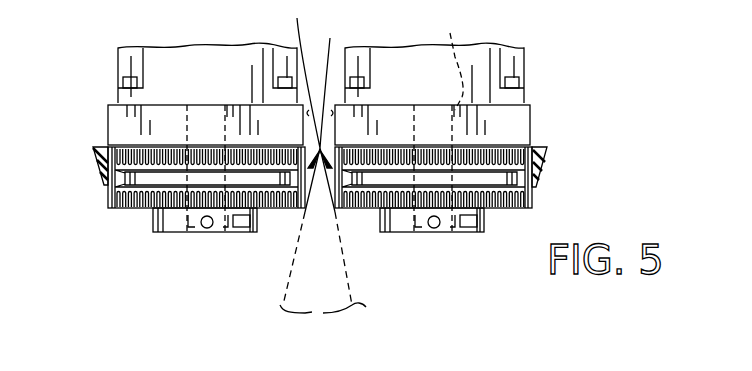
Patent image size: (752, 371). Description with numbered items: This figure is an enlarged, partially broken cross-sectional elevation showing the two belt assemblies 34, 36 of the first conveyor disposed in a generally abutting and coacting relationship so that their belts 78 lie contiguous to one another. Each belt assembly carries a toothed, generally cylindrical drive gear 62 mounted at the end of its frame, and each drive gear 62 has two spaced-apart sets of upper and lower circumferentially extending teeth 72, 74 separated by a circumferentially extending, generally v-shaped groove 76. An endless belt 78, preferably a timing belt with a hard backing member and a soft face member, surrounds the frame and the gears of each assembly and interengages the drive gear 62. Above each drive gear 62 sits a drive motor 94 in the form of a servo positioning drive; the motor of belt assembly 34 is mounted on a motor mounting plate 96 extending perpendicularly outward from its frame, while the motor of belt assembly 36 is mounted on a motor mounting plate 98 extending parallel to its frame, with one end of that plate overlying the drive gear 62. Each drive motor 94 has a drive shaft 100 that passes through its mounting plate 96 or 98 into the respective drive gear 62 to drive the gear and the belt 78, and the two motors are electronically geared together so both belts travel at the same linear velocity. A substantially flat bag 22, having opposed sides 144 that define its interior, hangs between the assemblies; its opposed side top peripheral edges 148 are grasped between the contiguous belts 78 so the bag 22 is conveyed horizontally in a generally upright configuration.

The bag 22 is at (318, 320).
The belt assembly 34 is at (448, 252).
The belt assembly 36 is at (207, 252).
The drive gear 62 is at (152, 218).
The upper circumferentially extending teeth 72 is at (454, 142).
The lower circumferentially extending teeth 74 is at (460, 208).
The v-shaped groove 76 is at (459, 182).
The endless belt 78 is at (92, 138).
The drive motor 94 is at (158, 47).
The motor mounting plate 96 is at (523, 133).
The motor mounting plate 98 is at (296, 133).
The drive shaft 100 is at (449, 60).
The opposed sides 144 is at (280, 305).
The side top peripheral edges 148 is at (317, 152).